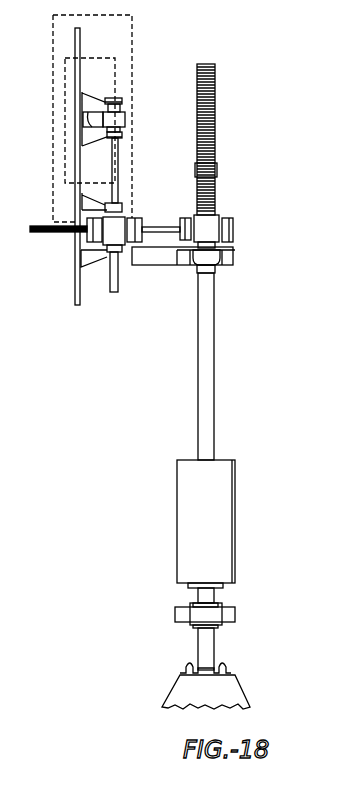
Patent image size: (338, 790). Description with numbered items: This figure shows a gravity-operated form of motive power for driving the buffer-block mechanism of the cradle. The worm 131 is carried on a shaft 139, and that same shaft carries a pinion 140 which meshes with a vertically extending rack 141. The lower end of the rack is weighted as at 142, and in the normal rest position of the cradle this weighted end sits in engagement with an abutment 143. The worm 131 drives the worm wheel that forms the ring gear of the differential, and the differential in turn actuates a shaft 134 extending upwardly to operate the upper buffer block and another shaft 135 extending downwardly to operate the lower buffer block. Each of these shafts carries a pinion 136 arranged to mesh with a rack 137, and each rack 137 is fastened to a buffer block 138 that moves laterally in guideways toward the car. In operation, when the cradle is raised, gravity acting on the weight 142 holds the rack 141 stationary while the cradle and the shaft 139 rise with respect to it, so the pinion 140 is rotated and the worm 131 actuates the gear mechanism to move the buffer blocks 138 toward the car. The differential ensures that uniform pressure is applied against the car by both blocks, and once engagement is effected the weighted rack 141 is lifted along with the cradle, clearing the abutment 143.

The worm 131 is at (116, 232).
The shaft 134 is at (118, 170).
The shaft 135 is at (108, 284).
The pinion 136 is at (125, 118).
The rack 137 is at (88, 118).
The buffer block 138 is at (102, 58).
The shaft 139 is at (143, 229).
The pinion 140 is at (208, 222).
The rack 141 is at (212, 148).
The weight 142 is at (234, 485).
The abutment 143 is at (237, 689).